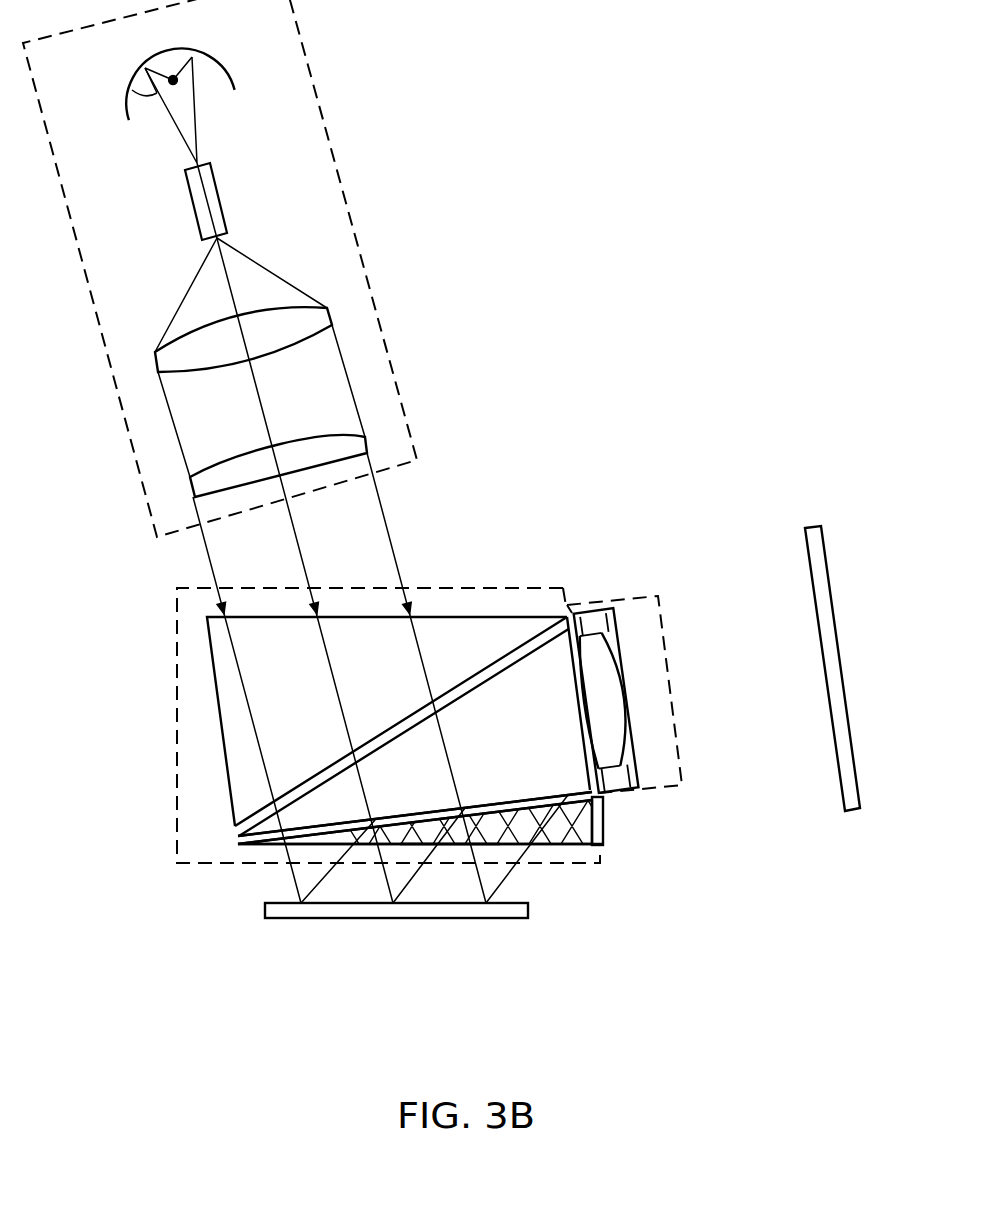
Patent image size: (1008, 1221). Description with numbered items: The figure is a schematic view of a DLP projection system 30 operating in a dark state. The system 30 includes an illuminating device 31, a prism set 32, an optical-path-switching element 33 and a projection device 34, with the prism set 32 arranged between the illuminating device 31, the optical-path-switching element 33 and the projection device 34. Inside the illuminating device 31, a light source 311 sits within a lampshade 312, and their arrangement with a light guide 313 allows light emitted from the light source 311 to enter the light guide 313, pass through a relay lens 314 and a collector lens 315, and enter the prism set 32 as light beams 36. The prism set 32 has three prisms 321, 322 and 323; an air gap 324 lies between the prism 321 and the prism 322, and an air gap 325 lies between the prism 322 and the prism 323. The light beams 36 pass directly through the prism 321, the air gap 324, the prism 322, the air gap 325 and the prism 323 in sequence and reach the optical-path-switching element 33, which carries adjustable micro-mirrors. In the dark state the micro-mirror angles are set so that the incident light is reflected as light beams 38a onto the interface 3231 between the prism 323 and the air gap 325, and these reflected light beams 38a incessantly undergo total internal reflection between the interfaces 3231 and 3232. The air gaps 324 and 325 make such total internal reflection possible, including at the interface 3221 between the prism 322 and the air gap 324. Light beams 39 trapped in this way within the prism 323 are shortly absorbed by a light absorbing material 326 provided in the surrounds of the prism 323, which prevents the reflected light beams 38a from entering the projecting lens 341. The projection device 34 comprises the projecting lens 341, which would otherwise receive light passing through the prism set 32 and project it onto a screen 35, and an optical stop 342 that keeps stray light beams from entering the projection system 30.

The DLP projection system 30 is at (699, 183).
The illuminating device 31 is at (323, 106).
The light source 311 is at (135, 89).
The lampshade 312 is at (218, 62).
The light guide 313 is at (217, 187).
The relay lens 314 is at (333, 308).
The collector lens 315 is at (363, 433).
The prism set 32 is at (441, 584).
The prism 321 is at (209, 666).
The prism 322 is at (267, 812).
The interface 3221 is at (541, 634).
The prism 323 is at (277, 849).
The interface 3231 is at (538, 849).
The interface 3232 is at (566, 848).
The air gap 324 is at (238, 836).
The air gap 325 is at (240, 845).
The light absorbing material 326 is at (605, 832).
The optical-path-switching element 33 is at (416, 918).
The projection device 34 is at (633, 597).
The projecting lens 341 is at (632, 723).
The optical stop 342 is at (628, 795).
The screen 35 is at (808, 527).
The light beams 36 is at (203, 550).
The reflected light beams 38a is at (323, 878).
The light beams 39 is at (448, 848).